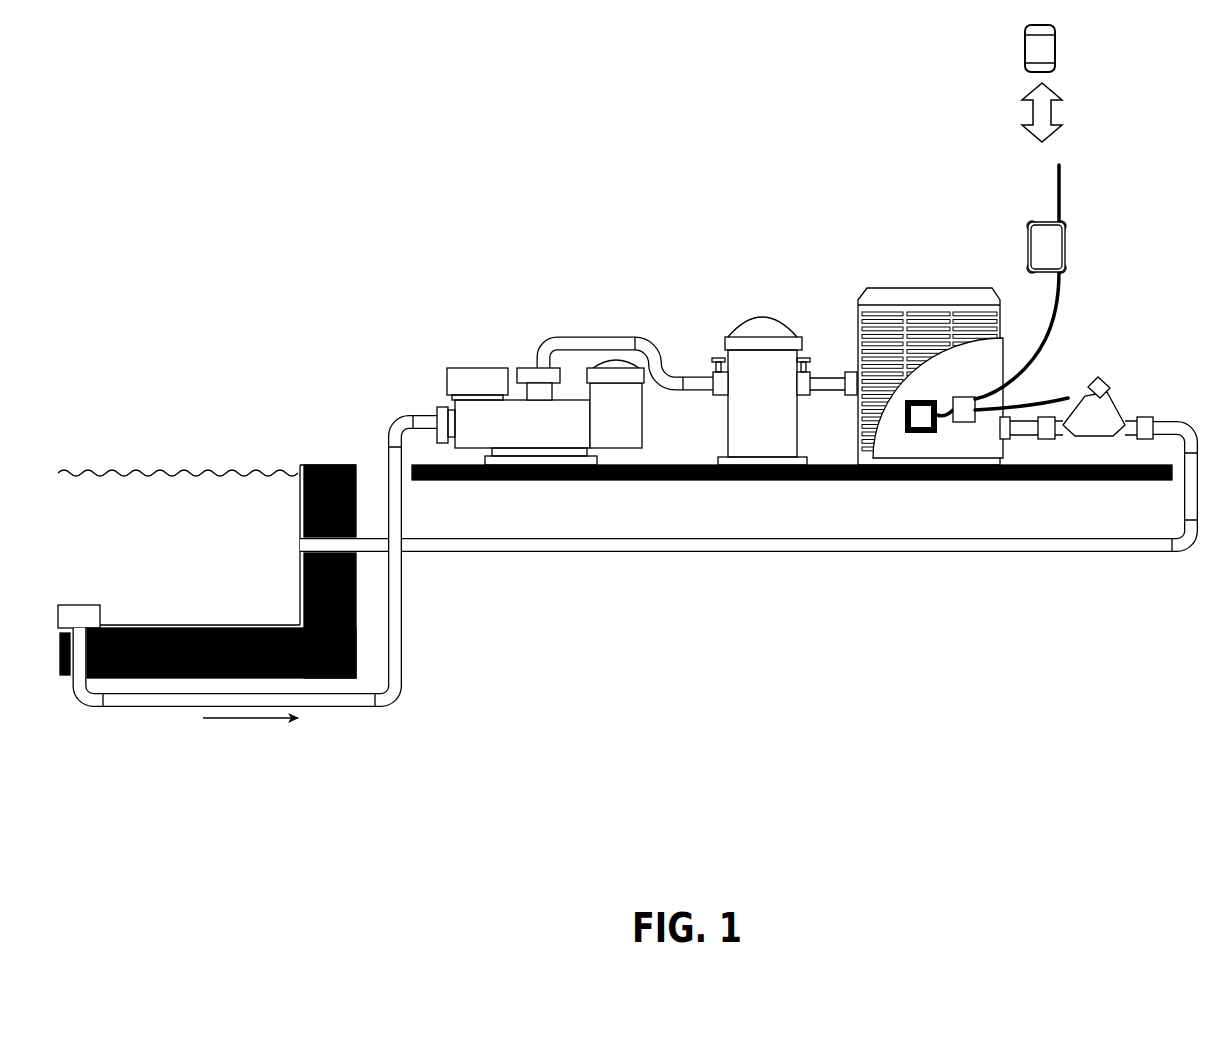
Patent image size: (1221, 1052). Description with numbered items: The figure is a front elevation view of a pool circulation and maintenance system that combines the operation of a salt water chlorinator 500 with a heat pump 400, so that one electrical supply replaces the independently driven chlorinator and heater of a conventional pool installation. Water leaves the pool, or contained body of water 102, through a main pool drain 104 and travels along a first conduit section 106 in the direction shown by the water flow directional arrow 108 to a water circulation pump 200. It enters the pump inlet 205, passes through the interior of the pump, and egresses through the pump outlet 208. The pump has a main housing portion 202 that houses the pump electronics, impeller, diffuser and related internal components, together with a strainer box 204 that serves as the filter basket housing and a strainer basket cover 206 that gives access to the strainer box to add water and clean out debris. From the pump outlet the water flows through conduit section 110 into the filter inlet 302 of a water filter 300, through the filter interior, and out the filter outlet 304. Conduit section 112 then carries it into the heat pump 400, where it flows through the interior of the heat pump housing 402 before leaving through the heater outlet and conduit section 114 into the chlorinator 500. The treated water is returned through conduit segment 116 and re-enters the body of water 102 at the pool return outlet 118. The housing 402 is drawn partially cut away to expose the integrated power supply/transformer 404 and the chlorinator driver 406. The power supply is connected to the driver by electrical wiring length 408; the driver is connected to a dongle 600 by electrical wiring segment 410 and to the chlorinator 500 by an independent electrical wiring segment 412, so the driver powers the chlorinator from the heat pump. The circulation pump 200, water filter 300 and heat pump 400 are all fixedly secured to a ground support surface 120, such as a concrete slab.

The body of water 102 is at (163, 549).
The main pool drain 104 is at (100, 612).
The conduit section 106 is at (140, 708).
The water flow directional arrow 108 is at (262, 722).
The conduit section 110 is at (578, 337).
The conduit section 112 is at (838, 392).
The conduit section 114 is at (1027, 440).
The conduit segment 116 is at (1025, 553).
The pool return outlet 118 is at (300, 538).
The ground support surface 120 is at (477, 482).
The water circulation pump 200 is at (553, 395).
The main housing portion 202 is at (553, 442).
The strainer box 204 is at (623, 442).
The pump inlet 205 is at (435, 420).
The strainer basket cover 206 is at (628, 366).
The pump outlet 208 is at (528, 366).
The water filter 300 is at (764, 364).
The filter inlet 302 is at (712, 378).
The filter outlet 304 is at (812, 373).
The heat pump 400 is at (927, 375).
The heat pump housing 402 is at (965, 298).
The power supply/transformer 404 is at (916, 438).
The chlorinator driver 406 is at (965, 428).
The electrical wiring length 408 is at (946, 410).
The electrical wiring segment 410 is at (1040, 345).
The electrical wiring segment 412 is at (1052, 400).
The salt water chlorinator 500 is at (1114, 377).
The dongle 600 is at (1074, 214).